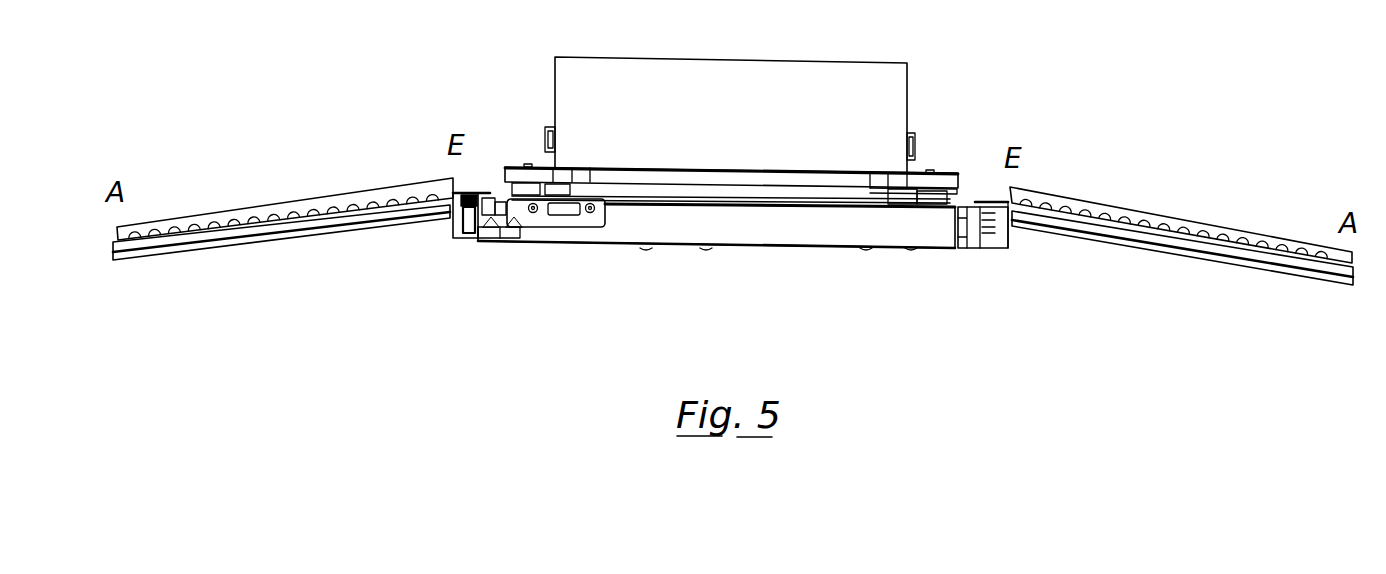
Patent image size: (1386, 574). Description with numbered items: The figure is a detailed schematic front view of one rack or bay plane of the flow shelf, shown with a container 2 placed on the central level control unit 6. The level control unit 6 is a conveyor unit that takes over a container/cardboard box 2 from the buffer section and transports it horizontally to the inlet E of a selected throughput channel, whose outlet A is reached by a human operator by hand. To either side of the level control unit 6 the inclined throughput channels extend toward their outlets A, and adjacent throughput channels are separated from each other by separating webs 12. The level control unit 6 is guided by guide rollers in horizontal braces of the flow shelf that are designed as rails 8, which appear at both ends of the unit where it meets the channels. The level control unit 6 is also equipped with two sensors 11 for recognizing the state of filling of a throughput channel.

The container/cardboard box 2 is at (890, 73).
The level control unit 6 is at (672, 231).
The rails 8 is at (461, 240).
The sensors 11 is at (268, 220).
The separating webs 12 is at (316, 198).